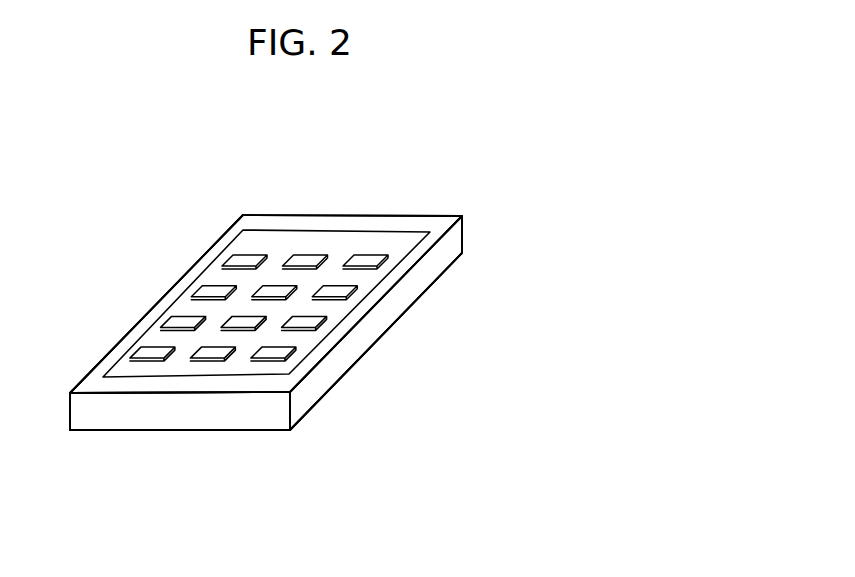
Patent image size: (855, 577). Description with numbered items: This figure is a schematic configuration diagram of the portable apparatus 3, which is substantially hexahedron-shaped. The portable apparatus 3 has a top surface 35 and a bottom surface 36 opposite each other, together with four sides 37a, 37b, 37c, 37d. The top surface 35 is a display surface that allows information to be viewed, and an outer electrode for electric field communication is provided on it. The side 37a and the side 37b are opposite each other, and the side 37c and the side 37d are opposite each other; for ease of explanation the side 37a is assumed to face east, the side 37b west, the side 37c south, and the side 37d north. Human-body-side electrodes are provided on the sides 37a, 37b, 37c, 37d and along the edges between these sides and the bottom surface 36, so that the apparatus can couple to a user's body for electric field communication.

The portable apparatus 3 is at (490, 148).
The top surface 35 is at (257, 212).
The bottom surface 36 is at (265, 436).
The side 37a is at (420, 296).
The side 37b is at (156, 292).
The side 37c is at (152, 426).
The side 37d is at (353, 210).